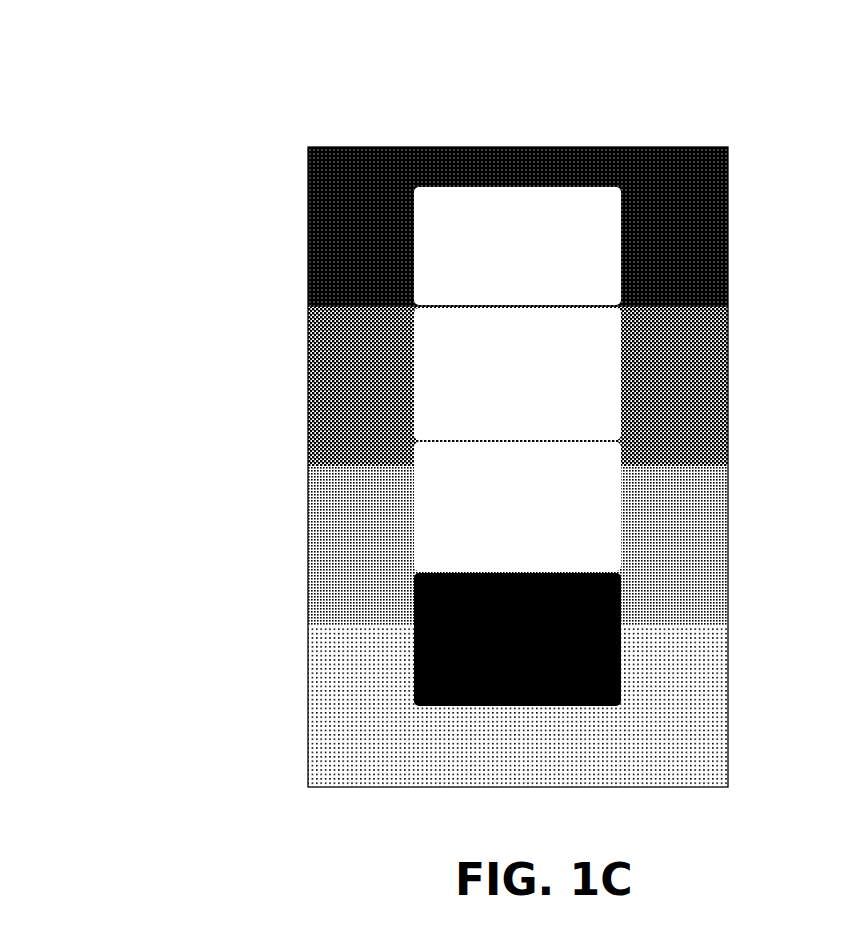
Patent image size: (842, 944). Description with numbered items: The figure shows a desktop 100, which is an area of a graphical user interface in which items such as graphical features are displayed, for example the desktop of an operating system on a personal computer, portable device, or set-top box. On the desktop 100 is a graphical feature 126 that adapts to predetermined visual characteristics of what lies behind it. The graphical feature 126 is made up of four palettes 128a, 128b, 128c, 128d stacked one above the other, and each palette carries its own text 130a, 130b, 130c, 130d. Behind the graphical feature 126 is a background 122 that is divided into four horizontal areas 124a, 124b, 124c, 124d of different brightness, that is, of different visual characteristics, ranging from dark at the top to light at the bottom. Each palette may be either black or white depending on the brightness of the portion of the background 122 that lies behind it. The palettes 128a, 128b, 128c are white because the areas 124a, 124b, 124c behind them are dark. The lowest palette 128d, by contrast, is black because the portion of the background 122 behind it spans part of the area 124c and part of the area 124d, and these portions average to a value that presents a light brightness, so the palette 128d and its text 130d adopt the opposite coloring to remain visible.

The desktop 100 is at (118, 37).
The background 122 is at (373, 138).
The graphical feature 126 is at (513, 138).
The area 124a is at (300, 222).
The area 124b is at (300, 380).
The area 124c is at (300, 532).
The area 124d is at (300, 686).
The palette 128a is at (720, 235).
The palette 128b is at (720, 372).
The palette 128c is at (617, 492).
The palette 128d is at (617, 637).
The text 130a is at (523, 222).
The text 130b is at (523, 350).
The text 130c is at (523, 480).
The text 130d is at (510, 618).